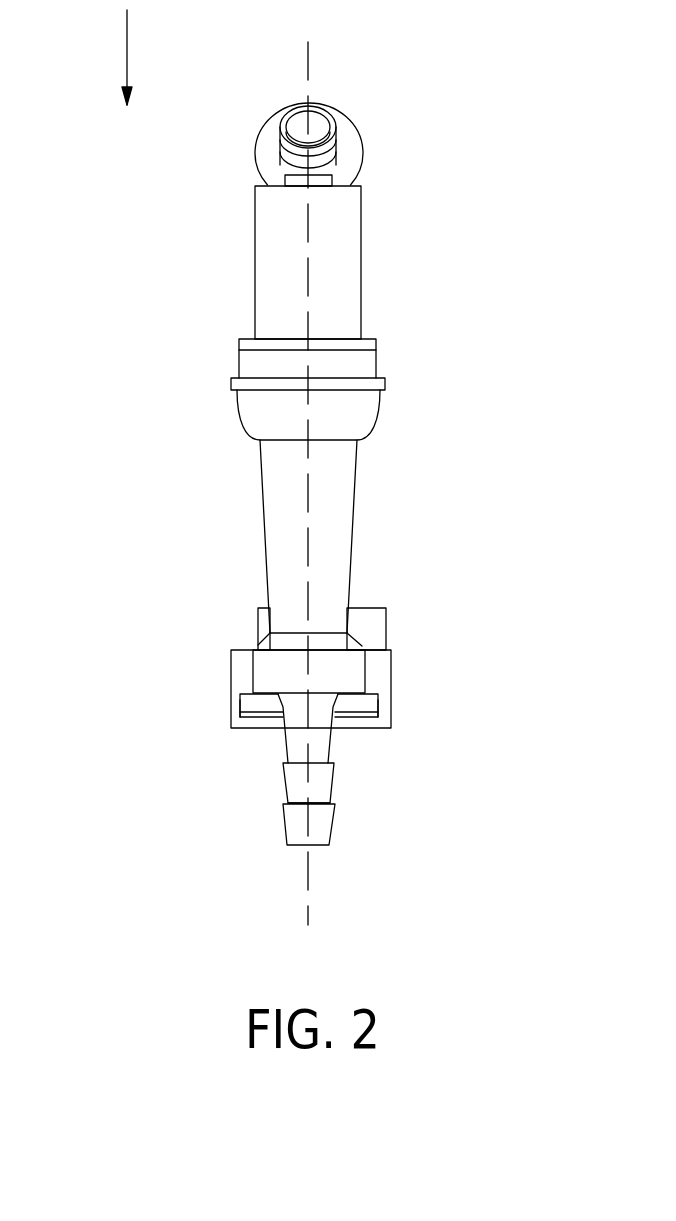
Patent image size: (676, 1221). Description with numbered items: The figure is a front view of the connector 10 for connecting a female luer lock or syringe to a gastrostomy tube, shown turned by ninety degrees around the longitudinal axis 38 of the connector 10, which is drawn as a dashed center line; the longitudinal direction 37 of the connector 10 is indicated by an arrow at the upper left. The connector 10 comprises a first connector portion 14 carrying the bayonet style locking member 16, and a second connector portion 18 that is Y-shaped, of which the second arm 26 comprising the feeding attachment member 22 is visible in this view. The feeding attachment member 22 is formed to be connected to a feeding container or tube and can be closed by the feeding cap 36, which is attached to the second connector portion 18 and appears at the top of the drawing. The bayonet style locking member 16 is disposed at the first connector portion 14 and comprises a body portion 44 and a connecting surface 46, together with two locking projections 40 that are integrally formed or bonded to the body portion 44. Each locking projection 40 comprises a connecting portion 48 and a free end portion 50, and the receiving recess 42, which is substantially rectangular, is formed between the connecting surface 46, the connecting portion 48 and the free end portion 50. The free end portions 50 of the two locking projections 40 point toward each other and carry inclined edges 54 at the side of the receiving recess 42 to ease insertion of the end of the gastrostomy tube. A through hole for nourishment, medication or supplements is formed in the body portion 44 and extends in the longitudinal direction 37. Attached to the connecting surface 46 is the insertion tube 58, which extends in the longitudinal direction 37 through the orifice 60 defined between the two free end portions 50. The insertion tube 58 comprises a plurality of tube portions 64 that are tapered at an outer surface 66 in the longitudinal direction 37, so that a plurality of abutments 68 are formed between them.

The connector 10 is at (500, 112).
The first connector portion 14 is at (435, 602).
The bayonet style locking member 16 is at (408, 679).
The second connector portion 18 is at (417, 362).
The feeding attachment member 22 is at (363, 337).
The second arm 26 is at (262, 413).
The feeding cap 36 is at (353, 128).
The longitudinal direction 37 is at (75, 57).
The longitudinal axis 38 is at (316, 58).
The locking projection 40 is at (227, 652).
The receiving recess 42 is at (253, 693).
The body portion 44 is at (258, 620).
The connecting surface 46 is at (379, 712).
The connecting portion 48 is at (240, 708).
The free end portion 50 is at (366, 729).
The inclined edge 54 is at (240, 714).
The insertion tube 58 is at (321, 852).
The orifice 60 is at (278, 729).
The tube portion 64 is at (288, 830).
The outer surface 66 is at (335, 783).
The abutment 68 is at (287, 802).